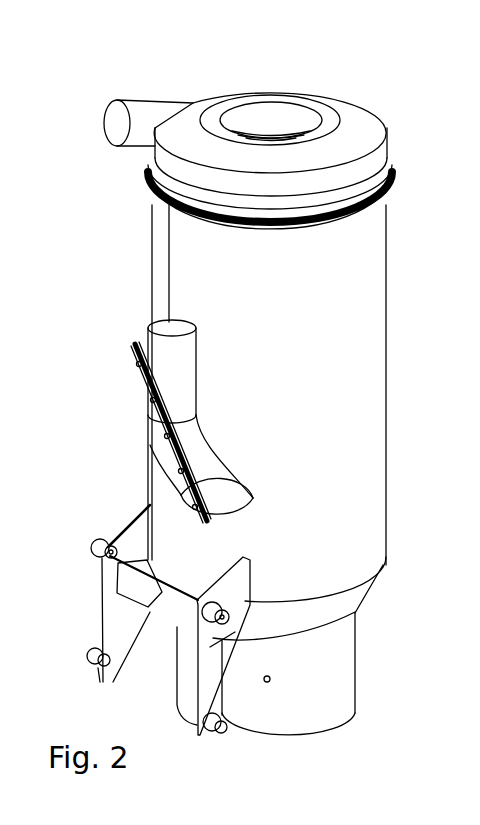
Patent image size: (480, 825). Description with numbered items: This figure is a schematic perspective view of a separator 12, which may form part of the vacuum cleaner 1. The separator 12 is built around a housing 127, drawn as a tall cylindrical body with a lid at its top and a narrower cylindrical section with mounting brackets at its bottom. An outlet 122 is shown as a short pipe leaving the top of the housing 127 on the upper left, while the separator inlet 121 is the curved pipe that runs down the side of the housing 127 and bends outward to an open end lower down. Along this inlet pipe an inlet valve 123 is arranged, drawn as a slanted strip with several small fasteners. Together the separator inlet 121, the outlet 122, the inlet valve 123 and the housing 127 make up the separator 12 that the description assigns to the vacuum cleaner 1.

The vacuum cleaner 1 is at (261, 402).
The separator 12 is at (420, 643).
The separator inlet 121 is at (230, 497).
The outlet 122 is at (118, 127).
The inlet valve 123 is at (152, 404).
The housing 127 is at (360, 344).